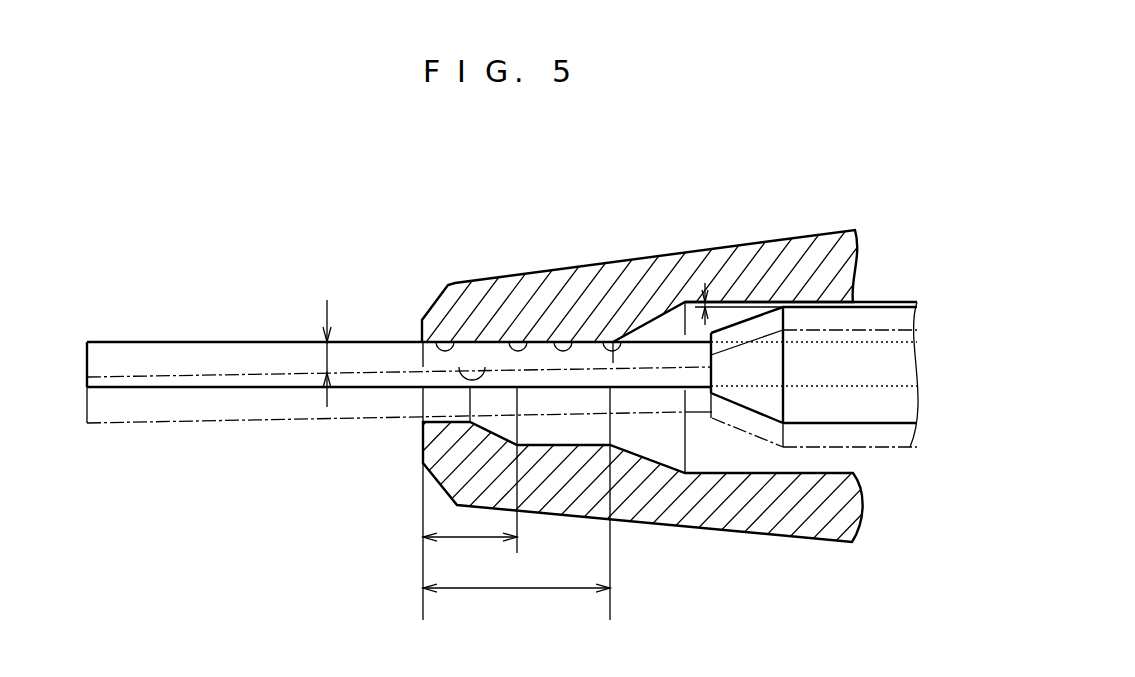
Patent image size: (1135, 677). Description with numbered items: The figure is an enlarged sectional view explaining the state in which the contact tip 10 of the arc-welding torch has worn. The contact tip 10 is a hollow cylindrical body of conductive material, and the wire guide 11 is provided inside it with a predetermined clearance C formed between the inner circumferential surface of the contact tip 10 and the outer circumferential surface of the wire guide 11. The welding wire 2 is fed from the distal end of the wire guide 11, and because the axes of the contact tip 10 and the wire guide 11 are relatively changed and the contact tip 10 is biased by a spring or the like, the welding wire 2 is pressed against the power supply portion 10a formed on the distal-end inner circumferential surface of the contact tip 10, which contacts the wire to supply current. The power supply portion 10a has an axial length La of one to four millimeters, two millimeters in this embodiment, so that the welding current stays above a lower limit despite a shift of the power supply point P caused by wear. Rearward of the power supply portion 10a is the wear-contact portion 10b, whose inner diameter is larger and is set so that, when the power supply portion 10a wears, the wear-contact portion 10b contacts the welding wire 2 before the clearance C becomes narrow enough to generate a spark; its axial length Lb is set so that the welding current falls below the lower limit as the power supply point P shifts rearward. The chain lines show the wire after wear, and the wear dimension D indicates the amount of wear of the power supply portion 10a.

The welding wire 2 is at (203, 375).
The contact tip 10 is at (810, 267).
The power supply portion 10a is at (487, 357).
The wear-contact portion 10b is at (571, 348).
The power supply point P is at (533, 333).
The clearance C is at (702, 300).
The wear dimension D is at (323, 358).
The axial length of the power supply portion La is at (470, 503).
The axial length Lb is at (554, 510).
The wire guide 11 is at (885, 317).